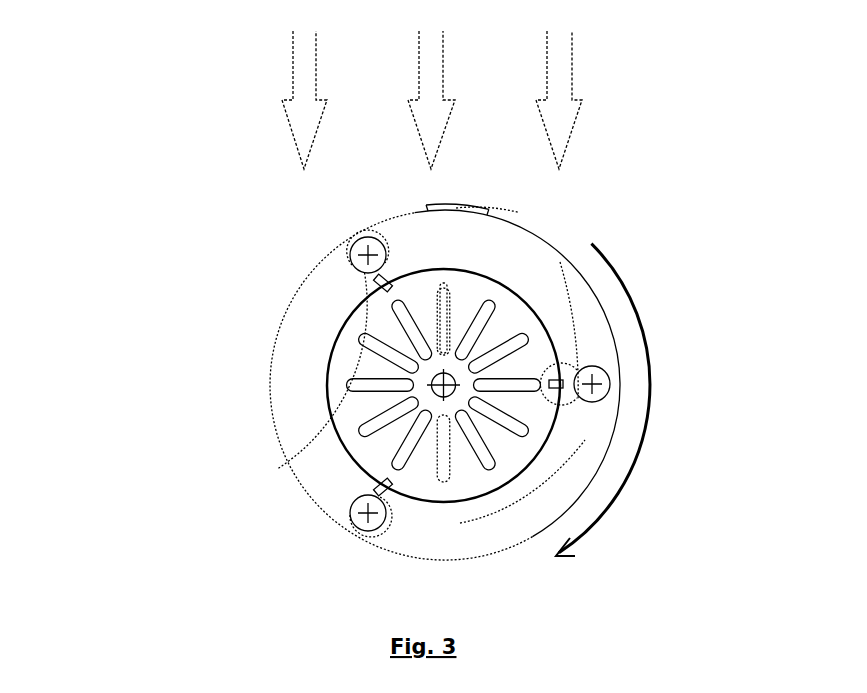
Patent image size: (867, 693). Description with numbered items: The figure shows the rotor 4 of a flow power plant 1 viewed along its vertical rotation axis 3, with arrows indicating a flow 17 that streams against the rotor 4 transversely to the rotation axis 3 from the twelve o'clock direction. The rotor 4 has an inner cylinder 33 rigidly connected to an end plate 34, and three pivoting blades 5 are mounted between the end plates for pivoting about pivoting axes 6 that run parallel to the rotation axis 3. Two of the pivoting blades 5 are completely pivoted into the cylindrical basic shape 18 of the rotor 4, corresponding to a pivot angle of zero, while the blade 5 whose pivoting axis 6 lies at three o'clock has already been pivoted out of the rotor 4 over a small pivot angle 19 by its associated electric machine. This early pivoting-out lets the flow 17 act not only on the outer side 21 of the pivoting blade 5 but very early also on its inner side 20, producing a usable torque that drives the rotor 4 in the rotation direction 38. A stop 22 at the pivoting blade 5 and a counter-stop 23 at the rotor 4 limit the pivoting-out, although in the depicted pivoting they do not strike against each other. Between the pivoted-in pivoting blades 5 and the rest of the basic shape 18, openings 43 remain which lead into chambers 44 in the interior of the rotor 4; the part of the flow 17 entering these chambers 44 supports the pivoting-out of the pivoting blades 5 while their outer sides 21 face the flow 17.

The flow power plant 1 is at (165, 85).
The rotation axis 3 is at (442, 385).
The rotor 4 is at (350, 540).
The pivoting blade 5 is at (272, 332).
The pivoting axis 6 is at (368, 255).
The flow 17 is at (280, 117).
The cylindrical basic shape 18 is at (283, 460).
The pivot angle 19 is at (426, 213).
The inner side 20 is at (485, 207).
The outer side 21 is at (522, 212).
The stop 22 is at (613, 404).
The counter-stop 23 is at (560, 386).
The inner cylinder 33 is at (328, 361).
The end plate 34 is at (515, 498).
The rotation direction 38 is at (645, 322).
The opening 43 is at (322, 514).
The chamber 44 is at (305, 399).